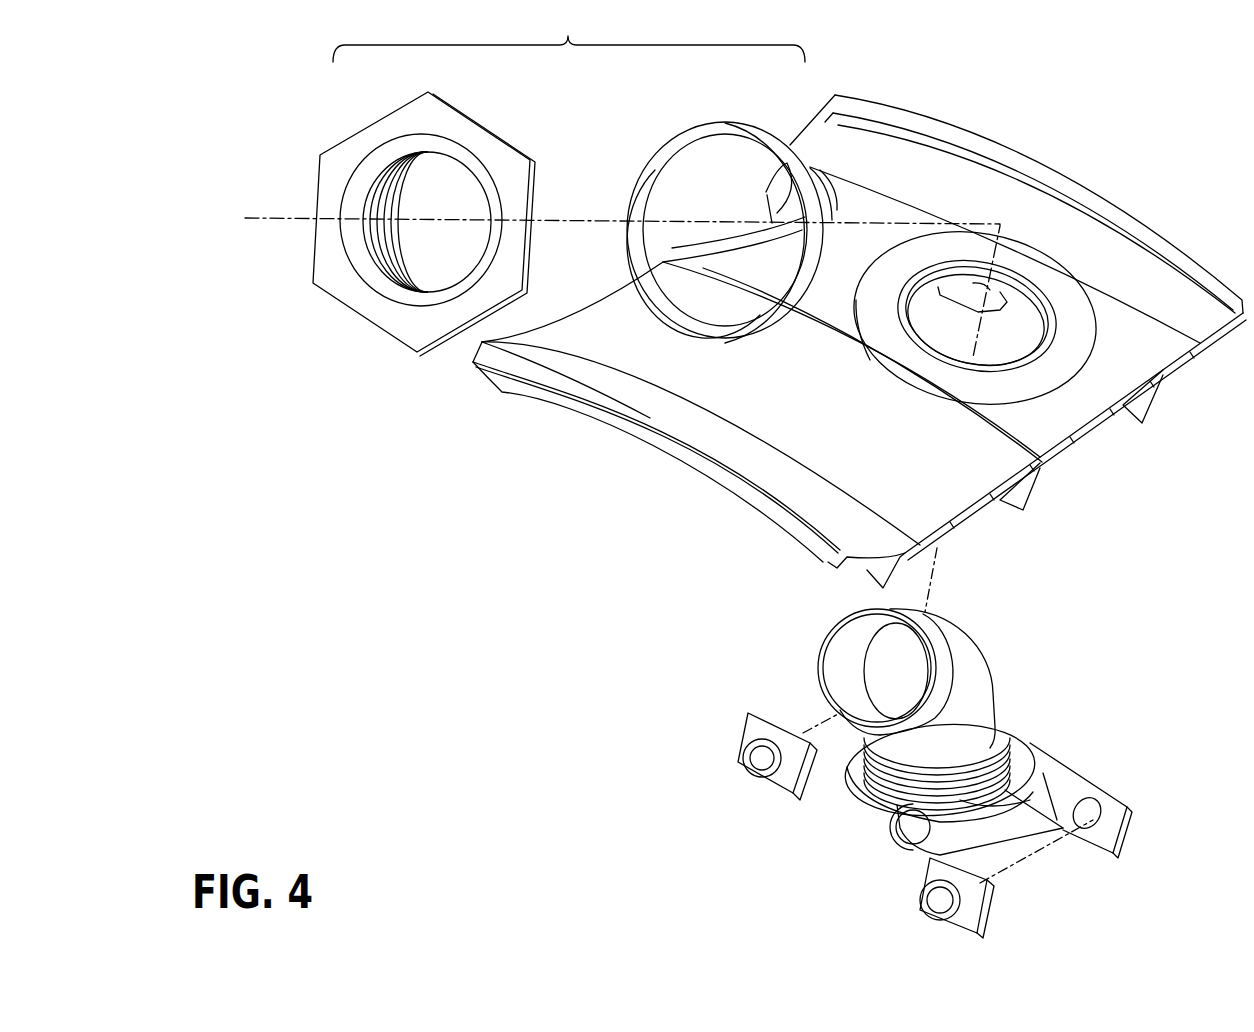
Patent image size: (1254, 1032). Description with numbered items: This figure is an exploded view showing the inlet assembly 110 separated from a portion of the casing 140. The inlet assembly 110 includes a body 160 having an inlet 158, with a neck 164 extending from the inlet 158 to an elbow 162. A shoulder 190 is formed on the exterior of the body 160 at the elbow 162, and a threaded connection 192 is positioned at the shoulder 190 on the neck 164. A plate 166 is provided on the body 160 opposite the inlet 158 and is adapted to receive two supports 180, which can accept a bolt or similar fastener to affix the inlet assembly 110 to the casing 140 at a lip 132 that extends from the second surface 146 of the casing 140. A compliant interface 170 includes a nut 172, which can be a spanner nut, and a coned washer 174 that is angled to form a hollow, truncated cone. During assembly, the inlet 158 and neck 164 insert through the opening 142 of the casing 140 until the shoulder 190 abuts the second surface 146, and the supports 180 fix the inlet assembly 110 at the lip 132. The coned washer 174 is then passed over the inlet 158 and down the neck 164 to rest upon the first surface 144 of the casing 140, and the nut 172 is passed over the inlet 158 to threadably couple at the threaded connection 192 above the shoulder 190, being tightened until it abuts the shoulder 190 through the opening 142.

The inlet assembly 110 is at (707, 645).
The lip 132 is at (1147, 420).
The casing 140 is at (1140, 313).
The opening 142 is at (1013, 328).
The first surface 144 is at (832, 408).
The second surface 146 is at (987, 517).
The inlet 158 is at (833, 647).
The body 160 is at (972, 672).
The elbow 162 is at (983, 820).
The neck 164 is at (970, 690).
The plate 166 is at (1067, 793).
The compliant interface 170 is at (569, 38).
The nut 172 is at (390, 115).
The coned washer 174 is at (667, 157).
The supports 180 is at (753, 727).
The shoulder 190 is at (1002, 790).
The threaded connection 192 is at (404, 191).